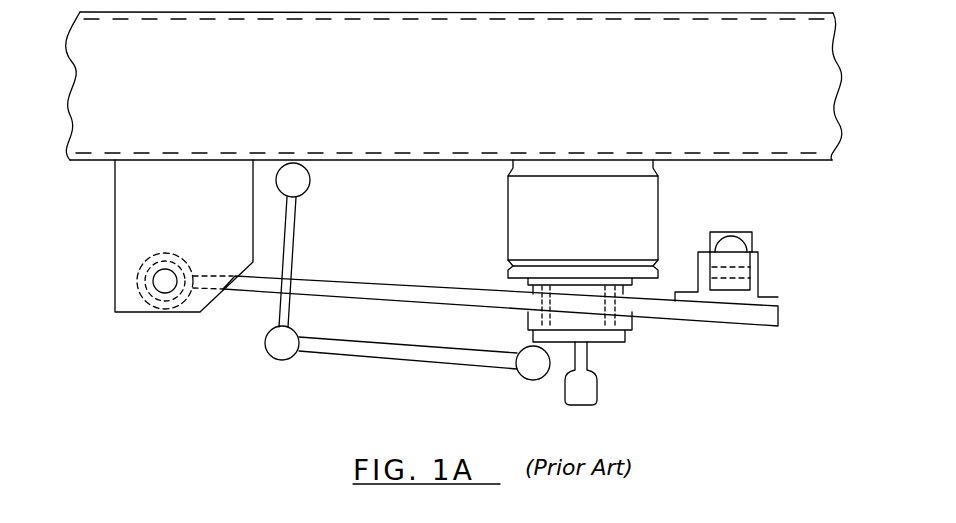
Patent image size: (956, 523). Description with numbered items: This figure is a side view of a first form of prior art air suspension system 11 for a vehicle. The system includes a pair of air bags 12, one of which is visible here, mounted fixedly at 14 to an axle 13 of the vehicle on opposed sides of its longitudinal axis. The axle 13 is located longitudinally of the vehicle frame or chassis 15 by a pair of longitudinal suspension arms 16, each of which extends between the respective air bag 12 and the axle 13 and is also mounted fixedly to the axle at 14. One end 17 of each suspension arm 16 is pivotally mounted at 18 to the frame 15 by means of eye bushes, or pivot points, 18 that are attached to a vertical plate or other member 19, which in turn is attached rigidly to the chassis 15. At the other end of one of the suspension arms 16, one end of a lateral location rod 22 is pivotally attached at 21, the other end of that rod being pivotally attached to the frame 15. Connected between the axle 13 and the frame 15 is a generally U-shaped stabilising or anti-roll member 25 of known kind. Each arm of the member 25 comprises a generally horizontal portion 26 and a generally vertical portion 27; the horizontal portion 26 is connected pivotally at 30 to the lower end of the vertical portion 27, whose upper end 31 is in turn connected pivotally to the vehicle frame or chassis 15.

The air suspension system 11 is at (355, 383).
The air bag 12 is at (630, 235).
The axle 13 is at (588, 388).
The fixed mounting 14 is at (553, 320).
The vehicle frame or chassis 15 is at (434, 104).
The longitudinal suspension arm 16 is at (458, 296).
The end of suspension arm 17 is at (164, 312).
The eye bush (pivot point) 18 is at (150, 306).
The vertical plate 19 is at (198, 227).
The pivotal attachment 21 is at (752, 280).
The lateral location rod 22 is at (735, 246).
The U-shaped stabilising or anti-roll member 25 is at (390, 355).
The horizontal portion 26 is at (487, 362).
The vertical portion 27 is at (293, 245).
The pivotal connection 30 is at (283, 343).
The upper end pivot 31 is at (296, 182).